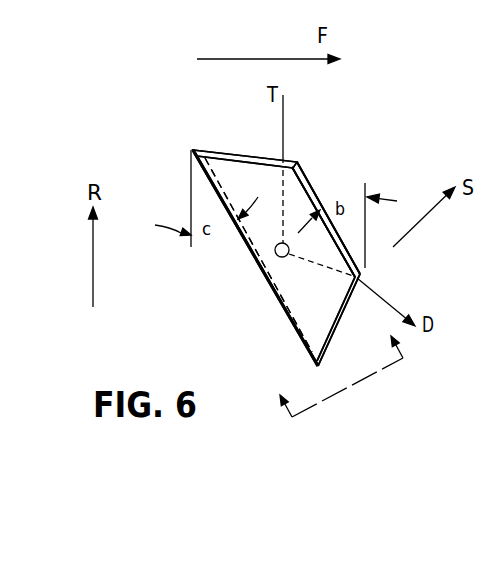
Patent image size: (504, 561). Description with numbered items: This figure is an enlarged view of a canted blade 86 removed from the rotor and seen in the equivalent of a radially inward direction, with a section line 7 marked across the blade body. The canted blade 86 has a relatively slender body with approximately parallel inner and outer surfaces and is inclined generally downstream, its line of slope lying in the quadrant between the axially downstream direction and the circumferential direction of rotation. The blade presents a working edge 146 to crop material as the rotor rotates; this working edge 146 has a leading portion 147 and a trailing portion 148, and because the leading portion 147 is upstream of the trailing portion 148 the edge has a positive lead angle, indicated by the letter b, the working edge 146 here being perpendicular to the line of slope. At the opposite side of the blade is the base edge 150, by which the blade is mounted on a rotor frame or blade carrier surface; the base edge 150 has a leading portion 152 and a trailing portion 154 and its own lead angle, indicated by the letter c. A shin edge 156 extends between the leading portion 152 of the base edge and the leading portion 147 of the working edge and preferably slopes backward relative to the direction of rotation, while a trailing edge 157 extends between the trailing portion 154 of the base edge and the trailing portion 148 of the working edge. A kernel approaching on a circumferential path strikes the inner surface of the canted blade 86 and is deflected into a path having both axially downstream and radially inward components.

The canted blade 86 is at (159, 128).
The shin edge 156 is at (252, 160).
The trailing portion of base edge 154 is at (302, 340).
The trailing edge 157 is at (347, 317).
The leading portion of working edge 147 is at (310, 184).
The working edge 146 is at (344, 164).
The base edge 150 is at (225, 277).
The leading portion of base edge 152 is at (191, 173).
The trailing portion of working edge 148 is at (366, 260).
The section line 7- 7 is at (335, 364).